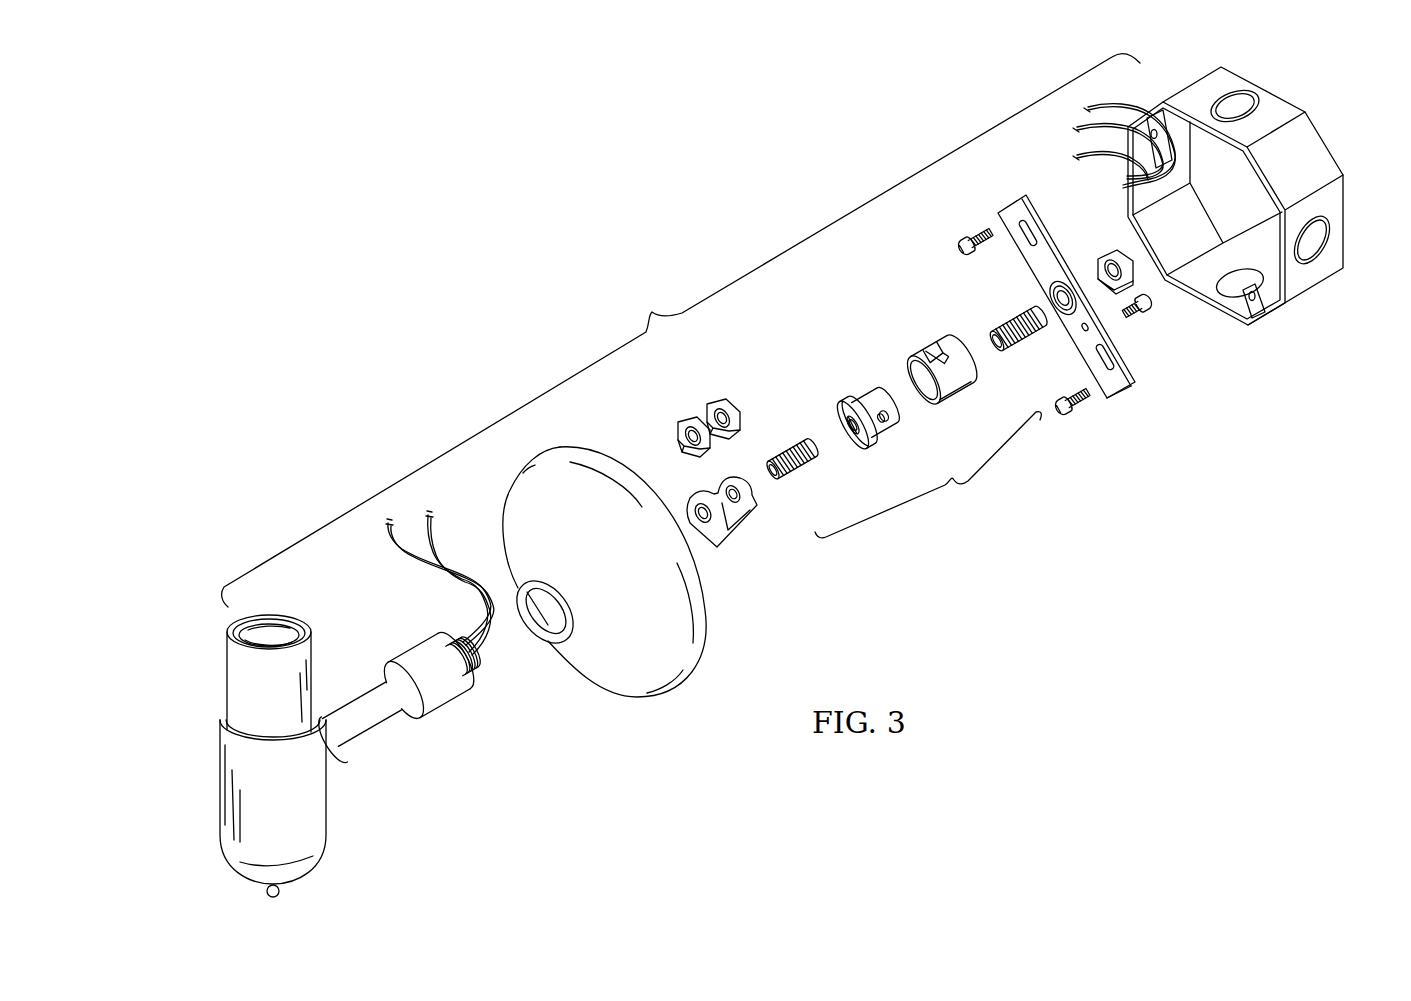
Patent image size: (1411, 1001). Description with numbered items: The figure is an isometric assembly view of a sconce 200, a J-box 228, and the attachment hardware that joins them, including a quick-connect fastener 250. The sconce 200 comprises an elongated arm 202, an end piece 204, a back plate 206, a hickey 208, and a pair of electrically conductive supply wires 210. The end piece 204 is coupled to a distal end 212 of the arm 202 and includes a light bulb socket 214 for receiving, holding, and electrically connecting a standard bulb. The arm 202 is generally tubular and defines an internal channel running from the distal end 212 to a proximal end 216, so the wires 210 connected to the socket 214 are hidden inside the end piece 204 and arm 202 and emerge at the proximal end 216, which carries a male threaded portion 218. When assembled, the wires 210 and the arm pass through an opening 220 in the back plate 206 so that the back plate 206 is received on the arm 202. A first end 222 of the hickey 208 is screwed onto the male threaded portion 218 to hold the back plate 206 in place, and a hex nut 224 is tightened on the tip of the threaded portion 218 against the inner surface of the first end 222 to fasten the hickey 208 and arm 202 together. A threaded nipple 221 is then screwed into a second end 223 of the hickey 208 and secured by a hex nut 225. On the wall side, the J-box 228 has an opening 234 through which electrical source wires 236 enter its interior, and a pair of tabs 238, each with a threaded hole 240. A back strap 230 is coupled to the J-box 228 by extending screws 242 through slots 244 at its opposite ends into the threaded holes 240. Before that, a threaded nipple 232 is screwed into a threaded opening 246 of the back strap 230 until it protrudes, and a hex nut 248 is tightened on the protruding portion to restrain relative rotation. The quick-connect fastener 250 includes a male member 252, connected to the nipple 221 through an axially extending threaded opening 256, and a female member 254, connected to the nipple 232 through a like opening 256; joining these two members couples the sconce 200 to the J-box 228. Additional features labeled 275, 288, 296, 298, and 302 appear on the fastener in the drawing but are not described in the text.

The sconce 200 is at (449, 851).
The elongated arm 202 is at (379, 739).
The end piece 204 is at (328, 834).
The back plate 206 is at (650, 697).
The hickey 208 is at (735, 543).
The supply wires 210 is at (395, 522).
The distal end 212 is at (333, 768).
The light bulb socket 214 is at (278, 632).
The proximal end 216 is at (482, 666).
The male threaded portion 218 is at (470, 682).
The opening 220 is at (535, 627).
The threaded nipple 221 is at (773, 447).
The first end 222 is at (688, 497).
The second end 223 is at (757, 505).
The hex nut 224 is at (682, 420).
The hex nut 225 is at (713, 402).
The J-box 228 is at (1305, 296).
The back strap 230 is at (1143, 383).
The threaded nipple 232 is at (1028, 332).
The opening 234 is at (1125, 177).
The electrical source wires 236 is at (1085, 110).
The tabs 238 is at (1152, 118).
The threaded hole 240 is at (1135, 128).
The screws 242 is at (1073, 414).
The slots 244 is at (1010, 213).
The threaded opening 246 is at (1050, 288).
The hex nut 248 is at (1098, 253).
The quick-connect fastener 250 is at (975, 497).
The male member 252 is at (863, 391).
The female member 254 is at (936, 338).
The axially extending threaded opening 256 is at (840, 418).
The tongue 275 is at (920, 383).
The ring body 288 is at (957, 392).
The set screw hole 296 is at (878, 440).
The flange 298 is at (848, 447).
The set screw 302 is at (887, 423).